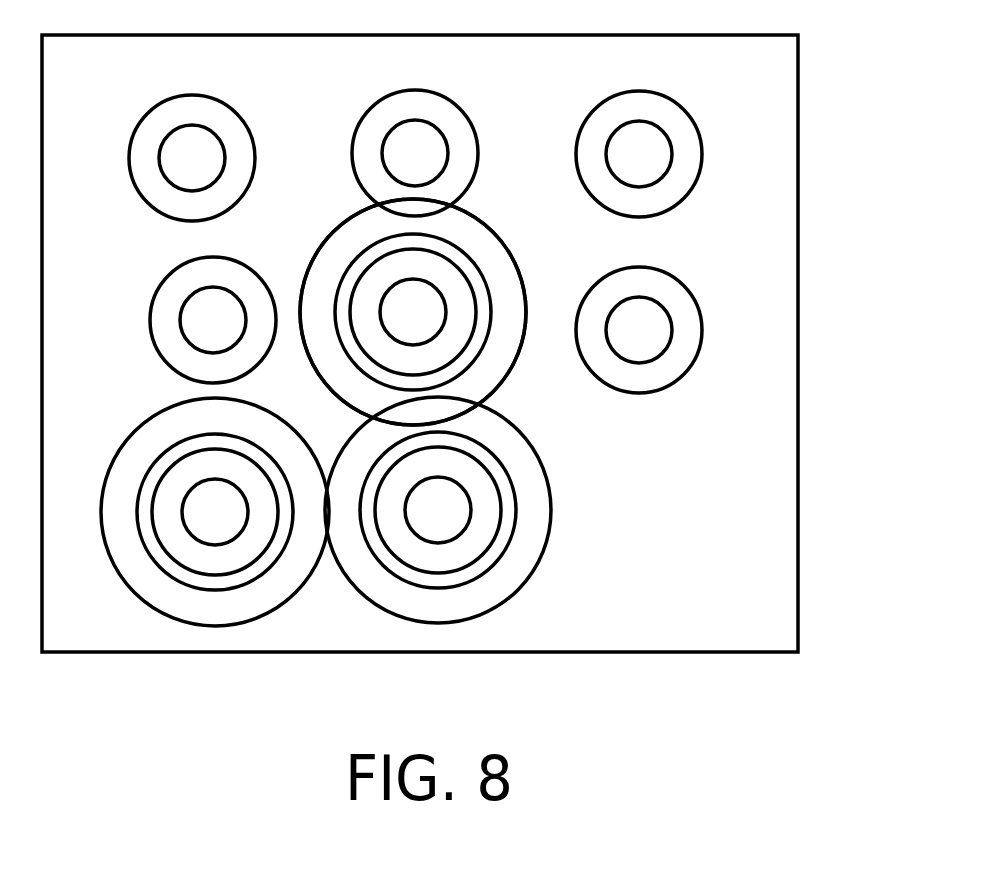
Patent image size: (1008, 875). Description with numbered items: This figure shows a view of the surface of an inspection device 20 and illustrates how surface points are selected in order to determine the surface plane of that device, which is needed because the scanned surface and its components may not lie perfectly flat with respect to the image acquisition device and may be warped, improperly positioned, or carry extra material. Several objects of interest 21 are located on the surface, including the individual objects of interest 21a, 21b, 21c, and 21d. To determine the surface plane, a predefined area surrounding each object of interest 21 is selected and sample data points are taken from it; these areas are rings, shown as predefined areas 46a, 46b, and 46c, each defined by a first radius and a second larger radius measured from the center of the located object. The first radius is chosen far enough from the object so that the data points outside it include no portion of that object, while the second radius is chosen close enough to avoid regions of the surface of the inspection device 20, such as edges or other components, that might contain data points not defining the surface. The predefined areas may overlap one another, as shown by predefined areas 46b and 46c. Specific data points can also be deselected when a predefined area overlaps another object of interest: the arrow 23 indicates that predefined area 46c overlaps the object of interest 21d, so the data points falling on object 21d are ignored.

The inspection device 20 is at (780, 153).
The object of interest 21 is at (187, 135).
The object of interest 21a is at (240, 532).
The object of interest 21b is at (465, 527).
The object of interest 21c is at (437, 324).
The object of interest 21d is at (419, 135).
The arrow 23 is at (468, 203).
The predefined area 46a is at (133, 455).
The predefined area 46b is at (550, 540).
The predefined area 46c is at (502, 355).